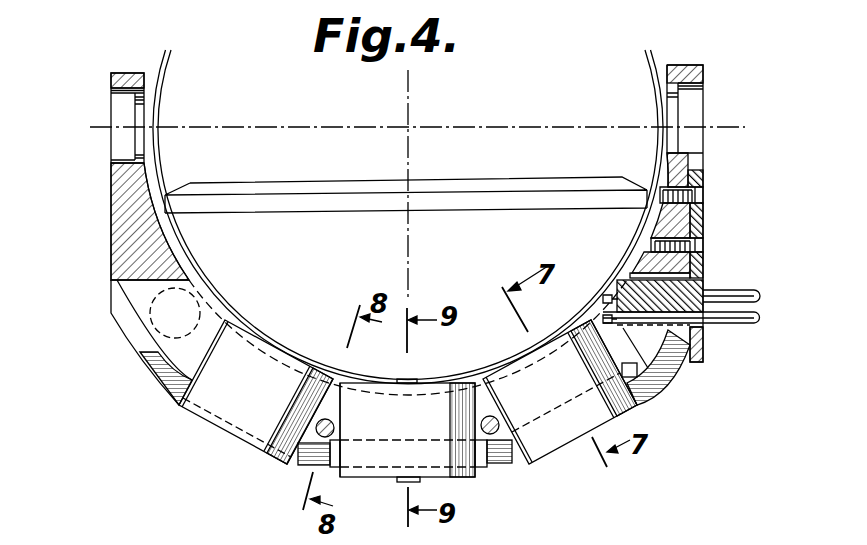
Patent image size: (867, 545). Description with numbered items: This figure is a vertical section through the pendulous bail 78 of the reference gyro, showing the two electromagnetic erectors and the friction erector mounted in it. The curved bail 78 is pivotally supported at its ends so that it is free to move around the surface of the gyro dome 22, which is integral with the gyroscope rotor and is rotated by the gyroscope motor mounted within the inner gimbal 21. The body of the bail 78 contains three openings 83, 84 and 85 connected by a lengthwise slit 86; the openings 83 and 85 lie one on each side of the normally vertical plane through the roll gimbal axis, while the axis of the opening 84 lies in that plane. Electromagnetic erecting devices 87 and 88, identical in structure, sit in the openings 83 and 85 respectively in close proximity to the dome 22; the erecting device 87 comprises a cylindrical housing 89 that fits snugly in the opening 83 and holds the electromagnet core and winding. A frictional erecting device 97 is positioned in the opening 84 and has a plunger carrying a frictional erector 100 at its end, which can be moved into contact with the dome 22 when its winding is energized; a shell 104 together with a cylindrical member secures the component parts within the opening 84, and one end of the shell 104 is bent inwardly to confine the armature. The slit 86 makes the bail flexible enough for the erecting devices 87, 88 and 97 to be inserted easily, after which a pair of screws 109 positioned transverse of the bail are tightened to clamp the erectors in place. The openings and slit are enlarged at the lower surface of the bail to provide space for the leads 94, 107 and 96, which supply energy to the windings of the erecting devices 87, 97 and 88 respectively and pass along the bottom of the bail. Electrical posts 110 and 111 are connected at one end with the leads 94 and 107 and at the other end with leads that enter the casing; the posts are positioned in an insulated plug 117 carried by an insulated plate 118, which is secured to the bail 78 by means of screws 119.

The inner gimbal 21 is at (628, 86).
The dome 22 is at (445, 222).
The pendulous bail 78 is at (108, 230).
The opening 83 is at (487, 380).
The opening 84 is at (343, 398).
The opening 85 is at (230, 324).
The lengthwise slit 86 is at (183, 353).
The electromagnetic erecting device 87 is at (621, 414).
The electromagnetic erecting device 88 is at (227, 430).
The cylindrical housing 89 is at (207, 399).
The lead 94 is at (603, 314).
The lead 96 is at (307, 464).
The frictional erecting device 97 is at (448, 478).
The frictional erector 100 is at (414, 380).
The shell 104 is at (385, 458).
The lead 107 is at (487, 466).
The screws 109 is at (335, 429).
The electrical post 110 is at (742, 320).
The electrical post 111 is at (750, 289).
The insulated plug 117 is at (703, 289).
The insulated plate 118 is at (703, 262).
The screws 119 is at (703, 237).